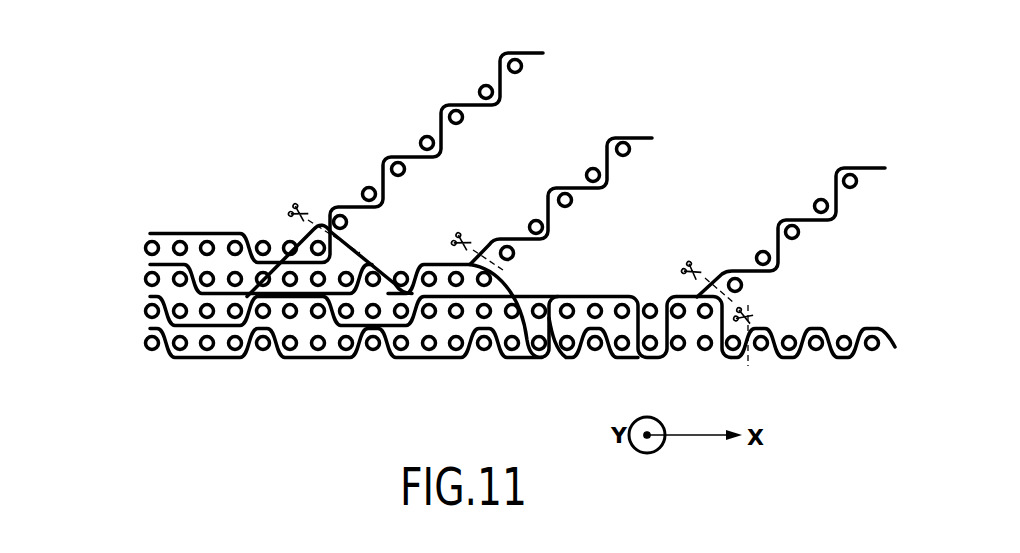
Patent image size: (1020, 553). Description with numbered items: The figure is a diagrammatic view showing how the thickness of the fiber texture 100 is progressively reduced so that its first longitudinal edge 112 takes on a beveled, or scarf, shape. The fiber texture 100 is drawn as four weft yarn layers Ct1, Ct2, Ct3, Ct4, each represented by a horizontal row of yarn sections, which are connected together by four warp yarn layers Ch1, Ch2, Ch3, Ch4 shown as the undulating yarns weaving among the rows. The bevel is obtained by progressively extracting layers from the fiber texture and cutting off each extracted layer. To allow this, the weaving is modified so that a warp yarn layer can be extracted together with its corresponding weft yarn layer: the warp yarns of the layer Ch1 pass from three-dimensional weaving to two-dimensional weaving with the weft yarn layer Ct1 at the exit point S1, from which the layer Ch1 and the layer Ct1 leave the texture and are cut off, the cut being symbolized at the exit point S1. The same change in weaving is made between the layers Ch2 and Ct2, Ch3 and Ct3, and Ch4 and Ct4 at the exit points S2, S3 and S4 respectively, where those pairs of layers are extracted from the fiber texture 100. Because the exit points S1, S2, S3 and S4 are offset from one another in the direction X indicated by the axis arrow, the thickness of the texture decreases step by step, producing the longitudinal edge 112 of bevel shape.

The fiber texture 100 is at (166, 190).
The first longitudinal edge 112 is at (415, 124).
The first weft yarn layer Ct1 is at (130, 248).
The second weft yarn layer Ct2 is at (130, 279).
The third weft yarn layer Ct3 is at (130, 311).
The fourth weft yarn layer Ct4 is at (130, 343).
The first warp yarn layer Ch1 is at (527, 49).
The second warp yarn layer Ch2 is at (636, 134).
The third warp yarn layer Ch3 is at (863, 167).
The fourth warp yarn layer Ch4 is at (896, 341).
The first exit point S1 is at (321, 206).
The second exit point S2 is at (483, 234).
The third exit point S3 is at (712, 260).
The fourth exit point S4 is at (770, 318).